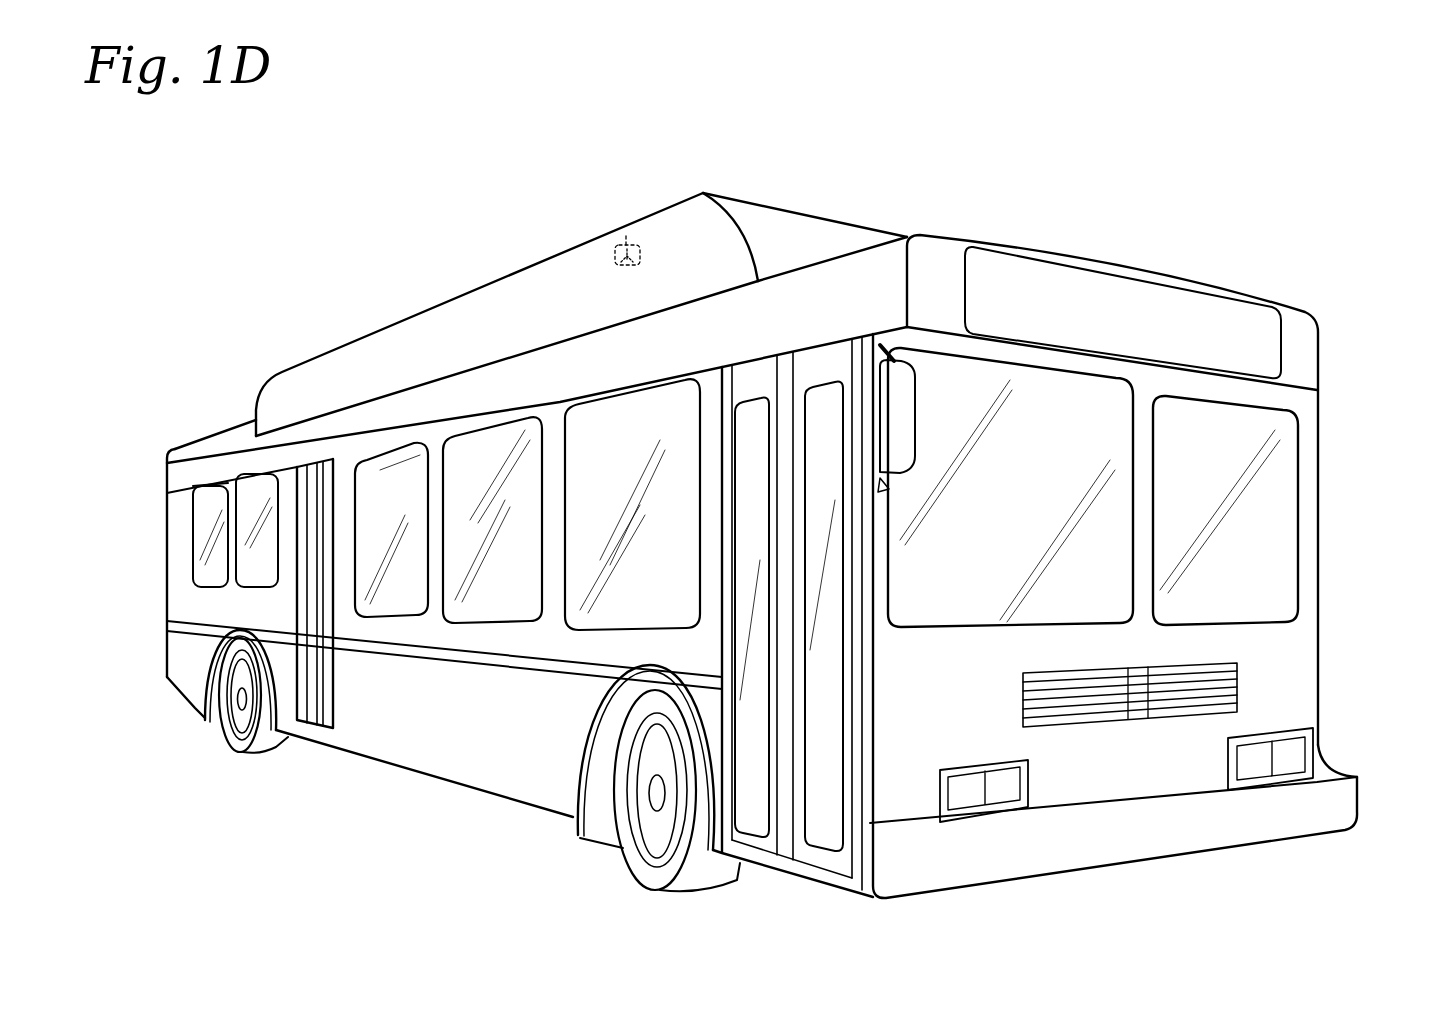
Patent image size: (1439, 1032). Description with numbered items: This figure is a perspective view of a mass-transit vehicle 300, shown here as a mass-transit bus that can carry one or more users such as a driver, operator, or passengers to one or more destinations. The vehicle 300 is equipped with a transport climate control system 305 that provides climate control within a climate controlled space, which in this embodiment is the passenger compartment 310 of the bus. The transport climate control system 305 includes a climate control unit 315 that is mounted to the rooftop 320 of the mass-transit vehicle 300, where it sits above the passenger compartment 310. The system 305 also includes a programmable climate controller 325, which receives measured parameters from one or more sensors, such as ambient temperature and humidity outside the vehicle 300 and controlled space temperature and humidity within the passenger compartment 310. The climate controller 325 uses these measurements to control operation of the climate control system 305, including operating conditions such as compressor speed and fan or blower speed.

The mass-transit vehicle 300 is at (995, 180).
The transport climate control system 305 is at (523, 244).
The passenger compartment 310 is at (1232, 527).
The climate control unit 315 is at (425, 307).
The rooftop 320 is at (1163, 271).
The climate controller 325 is at (624, 236).